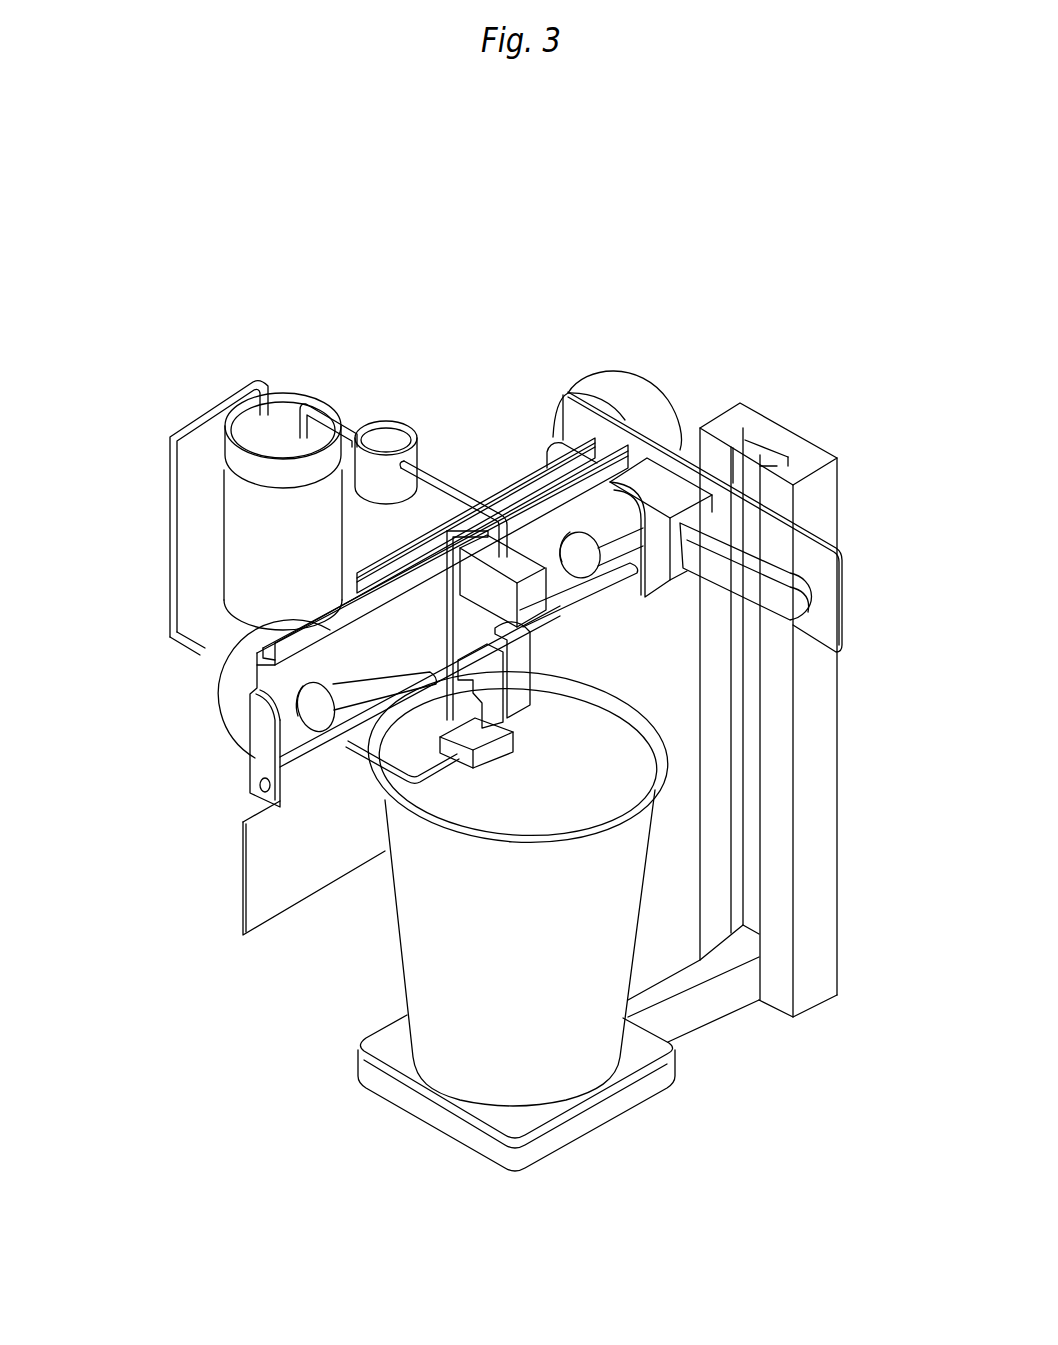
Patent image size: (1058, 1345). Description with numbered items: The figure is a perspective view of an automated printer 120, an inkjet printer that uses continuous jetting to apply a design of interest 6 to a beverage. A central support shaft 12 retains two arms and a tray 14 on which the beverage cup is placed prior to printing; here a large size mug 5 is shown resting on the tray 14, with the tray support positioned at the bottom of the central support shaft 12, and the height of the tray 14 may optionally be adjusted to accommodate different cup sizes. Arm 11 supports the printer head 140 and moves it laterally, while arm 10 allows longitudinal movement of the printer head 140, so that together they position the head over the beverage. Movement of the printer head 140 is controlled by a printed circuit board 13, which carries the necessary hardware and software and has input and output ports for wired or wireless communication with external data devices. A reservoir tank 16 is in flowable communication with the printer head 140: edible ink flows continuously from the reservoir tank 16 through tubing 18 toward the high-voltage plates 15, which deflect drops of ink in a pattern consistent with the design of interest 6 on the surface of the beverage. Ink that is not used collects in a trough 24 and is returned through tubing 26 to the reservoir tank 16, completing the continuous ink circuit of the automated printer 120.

The large size mug 5 is at (550, 997).
The design of interest 6 is at (454, 822).
The arm 10 is at (281, 688).
The arm 11 is at (775, 599).
The central support shaft 12 is at (812, 731).
The printed circuit board 13 is at (282, 855).
The tray 14 is at (426, 1111).
The high-voltage plates 15 is at (519, 649).
The reservoir tank 16 is at (280, 543).
The tubing 18 is at (428, 473).
The trough 24 is at (446, 746).
The tubing 26 is at (397, 773).
The automated printer 120 is at (292, 1222).
The printer head 140 is at (485, 528).